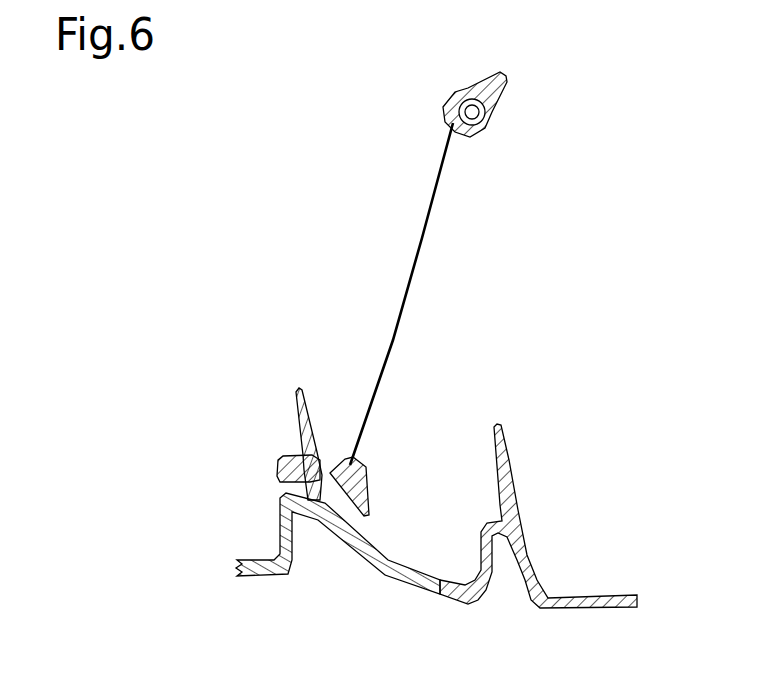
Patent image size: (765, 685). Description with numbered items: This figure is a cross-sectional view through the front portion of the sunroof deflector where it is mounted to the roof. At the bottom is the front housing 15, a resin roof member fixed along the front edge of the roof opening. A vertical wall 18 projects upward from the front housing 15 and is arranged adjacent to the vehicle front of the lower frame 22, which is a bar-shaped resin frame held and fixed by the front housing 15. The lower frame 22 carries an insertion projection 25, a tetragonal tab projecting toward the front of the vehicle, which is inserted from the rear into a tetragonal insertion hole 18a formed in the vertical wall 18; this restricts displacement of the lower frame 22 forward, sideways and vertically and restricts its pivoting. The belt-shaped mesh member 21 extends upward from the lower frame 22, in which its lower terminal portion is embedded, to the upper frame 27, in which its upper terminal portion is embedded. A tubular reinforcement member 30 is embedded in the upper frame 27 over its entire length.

The front housing 15 is at (529, 507).
The vertical wall 18 is at (298, 389).
The insertion hole 18a is at (280, 497).
The mesh member 21 is at (416, 268).
The lower frame 22 is at (368, 488).
The insertion projection 25 is at (287, 486).
The upper frame 27 is at (500, 103).
The reinforcement member 30 is at (468, 97).